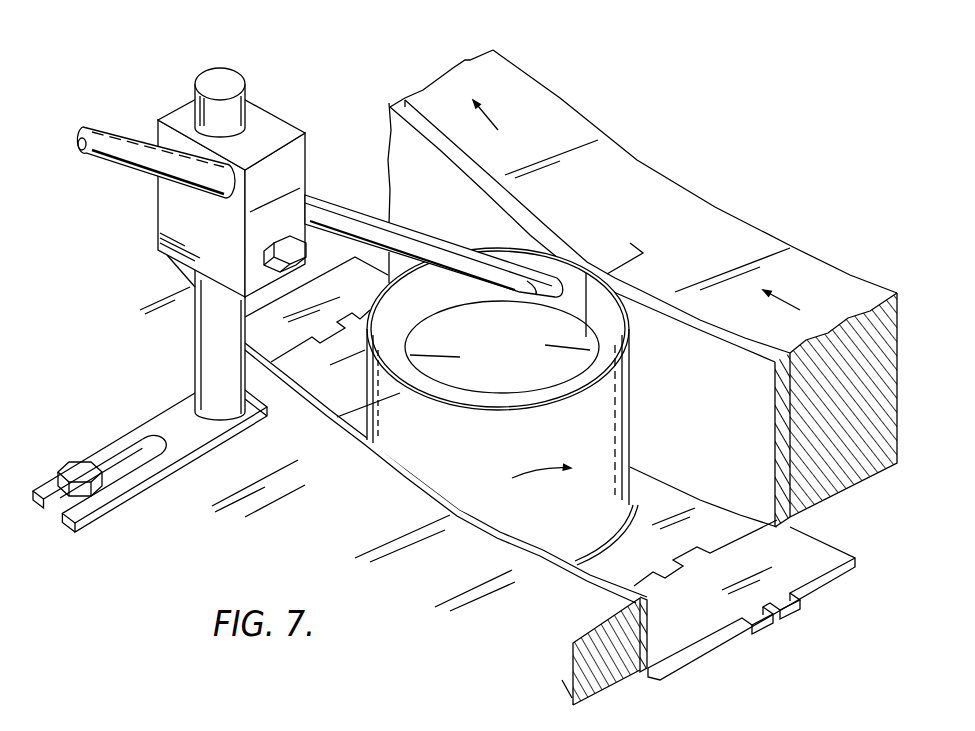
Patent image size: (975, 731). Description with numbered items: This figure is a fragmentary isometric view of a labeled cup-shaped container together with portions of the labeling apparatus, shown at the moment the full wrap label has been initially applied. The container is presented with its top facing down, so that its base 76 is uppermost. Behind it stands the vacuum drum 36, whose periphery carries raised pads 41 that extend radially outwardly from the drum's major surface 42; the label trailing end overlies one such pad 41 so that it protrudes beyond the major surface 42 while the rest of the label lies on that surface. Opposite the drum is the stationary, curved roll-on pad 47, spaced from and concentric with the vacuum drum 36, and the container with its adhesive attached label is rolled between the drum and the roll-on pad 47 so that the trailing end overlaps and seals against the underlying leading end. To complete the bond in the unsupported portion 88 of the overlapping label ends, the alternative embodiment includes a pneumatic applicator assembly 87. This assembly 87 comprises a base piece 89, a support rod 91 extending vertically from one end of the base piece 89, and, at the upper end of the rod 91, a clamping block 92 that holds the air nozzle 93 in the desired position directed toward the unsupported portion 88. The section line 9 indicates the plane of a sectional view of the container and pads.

The vacuum drum 36 is at (605, 167).
The raised pads 41 is at (610, 277).
The major surface 42 is at (708, 423).
The roll-on pad 47 is at (381, 470).
The base 76 is at (509, 365).
The unsupported portion 88 is at (583, 305).
The base piece 89 is at (176, 416).
The support rod 91 is at (205, 337).
The clamping block 92 is at (270, 113).
The air nozzle 93 is at (358, 213).
The pneumatic applicator assembly 87 is at (143, 95).
The section line 9- 9 is at (352, 408).